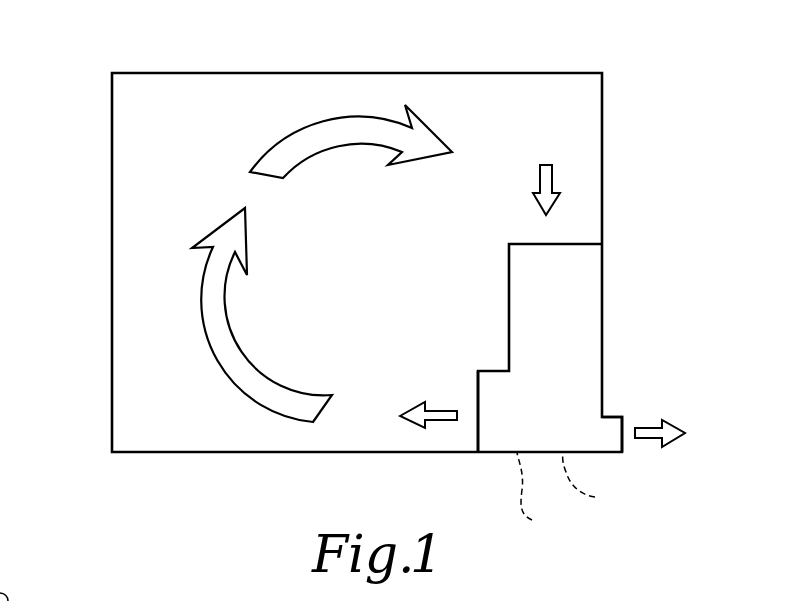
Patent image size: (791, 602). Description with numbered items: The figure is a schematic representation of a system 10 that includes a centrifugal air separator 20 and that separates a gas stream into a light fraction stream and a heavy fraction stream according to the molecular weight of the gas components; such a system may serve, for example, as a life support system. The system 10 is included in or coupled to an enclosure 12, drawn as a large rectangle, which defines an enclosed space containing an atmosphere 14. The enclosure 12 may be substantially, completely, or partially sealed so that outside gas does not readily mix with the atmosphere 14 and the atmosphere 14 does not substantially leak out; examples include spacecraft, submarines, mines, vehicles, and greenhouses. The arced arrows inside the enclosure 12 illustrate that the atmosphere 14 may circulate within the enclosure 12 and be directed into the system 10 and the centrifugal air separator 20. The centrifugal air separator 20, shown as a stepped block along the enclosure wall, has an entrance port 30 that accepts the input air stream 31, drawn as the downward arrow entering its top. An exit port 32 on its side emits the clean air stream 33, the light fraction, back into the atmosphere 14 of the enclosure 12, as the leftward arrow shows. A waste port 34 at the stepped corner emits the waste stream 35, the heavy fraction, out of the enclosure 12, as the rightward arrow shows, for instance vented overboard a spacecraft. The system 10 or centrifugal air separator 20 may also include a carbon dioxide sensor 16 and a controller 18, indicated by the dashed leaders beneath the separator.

The system 10 is at (380, 281).
The enclosure 12 is at (192, 72).
The atmosphere 14 is at (150, 155).
The carbon dioxide sensor 16 is at (540, 495).
The controller 18 is at (594, 482).
The centrifugal air separator 20 is at (564, 330).
The entrance port 30 is at (522, 243).
The input air stream 31 is at (553, 175).
The exit port 32 is at (477, 398).
The clean air stream 33 is at (436, 428).
The waste port 34 is at (623, 422).
The waste stream 35 is at (655, 440).